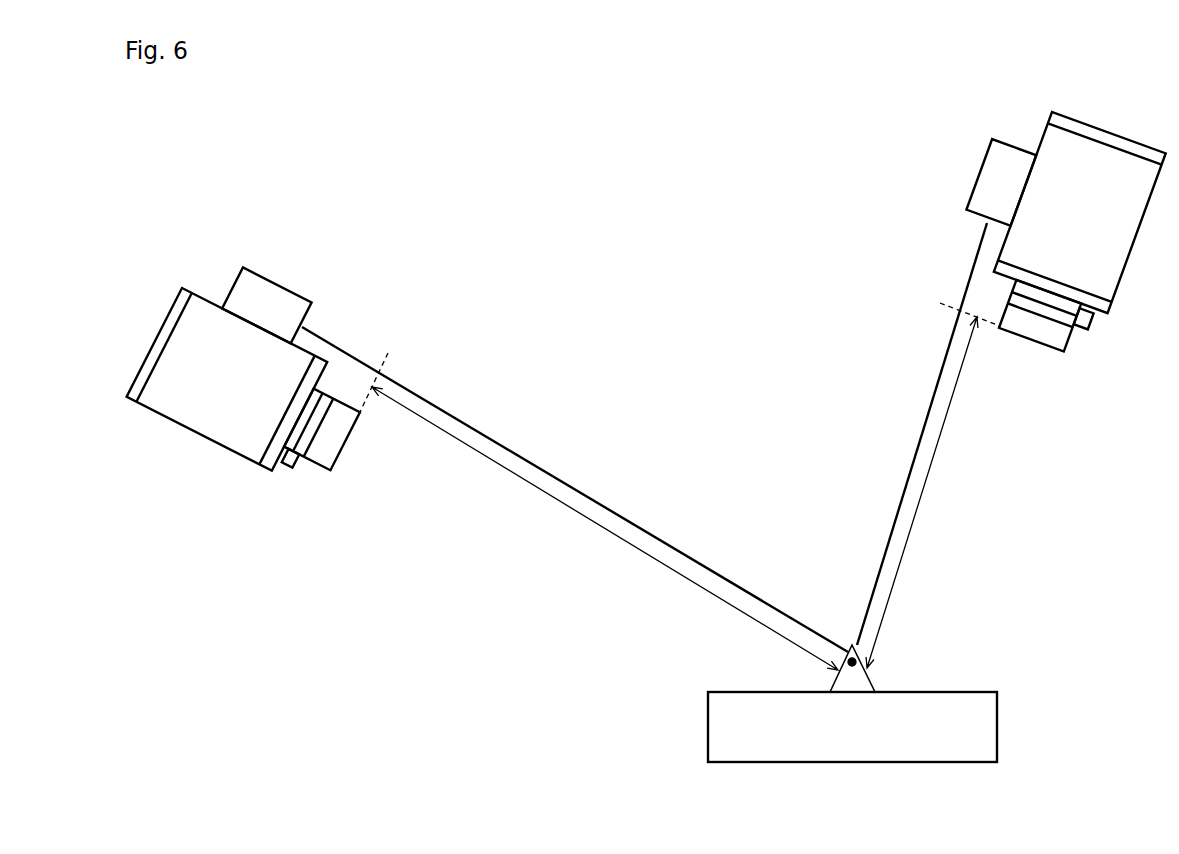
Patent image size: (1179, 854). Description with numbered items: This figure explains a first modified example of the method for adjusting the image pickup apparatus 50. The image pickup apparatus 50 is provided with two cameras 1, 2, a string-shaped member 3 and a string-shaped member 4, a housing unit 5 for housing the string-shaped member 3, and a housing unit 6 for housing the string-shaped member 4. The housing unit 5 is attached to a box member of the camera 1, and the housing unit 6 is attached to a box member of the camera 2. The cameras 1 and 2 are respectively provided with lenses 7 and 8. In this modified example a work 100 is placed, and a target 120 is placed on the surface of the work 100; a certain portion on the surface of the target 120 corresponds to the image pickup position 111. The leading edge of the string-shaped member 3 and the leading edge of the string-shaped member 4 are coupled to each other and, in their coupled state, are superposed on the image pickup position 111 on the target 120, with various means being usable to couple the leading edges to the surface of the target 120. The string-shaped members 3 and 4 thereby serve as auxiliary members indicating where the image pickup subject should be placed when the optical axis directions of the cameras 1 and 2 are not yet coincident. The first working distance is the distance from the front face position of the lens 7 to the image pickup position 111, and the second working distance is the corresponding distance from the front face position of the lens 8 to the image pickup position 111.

The image pickup apparatus 50 is at (638, 164).
The camera 1 is at (141, 284).
The camera 2 is at (1122, 106).
The string-shaped member 3 is at (608, 511).
The string-shaped member 4 is at (905, 487).
The housing unit 5 is at (268, 297).
The housing unit 6 is at (988, 178).
The lens 7 is at (278, 467).
The lens 8 is at (1098, 313).
The work 100 is at (998, 727).
The image pickup position 111 is at (848, 653).
The target 120 is at (862, 684).